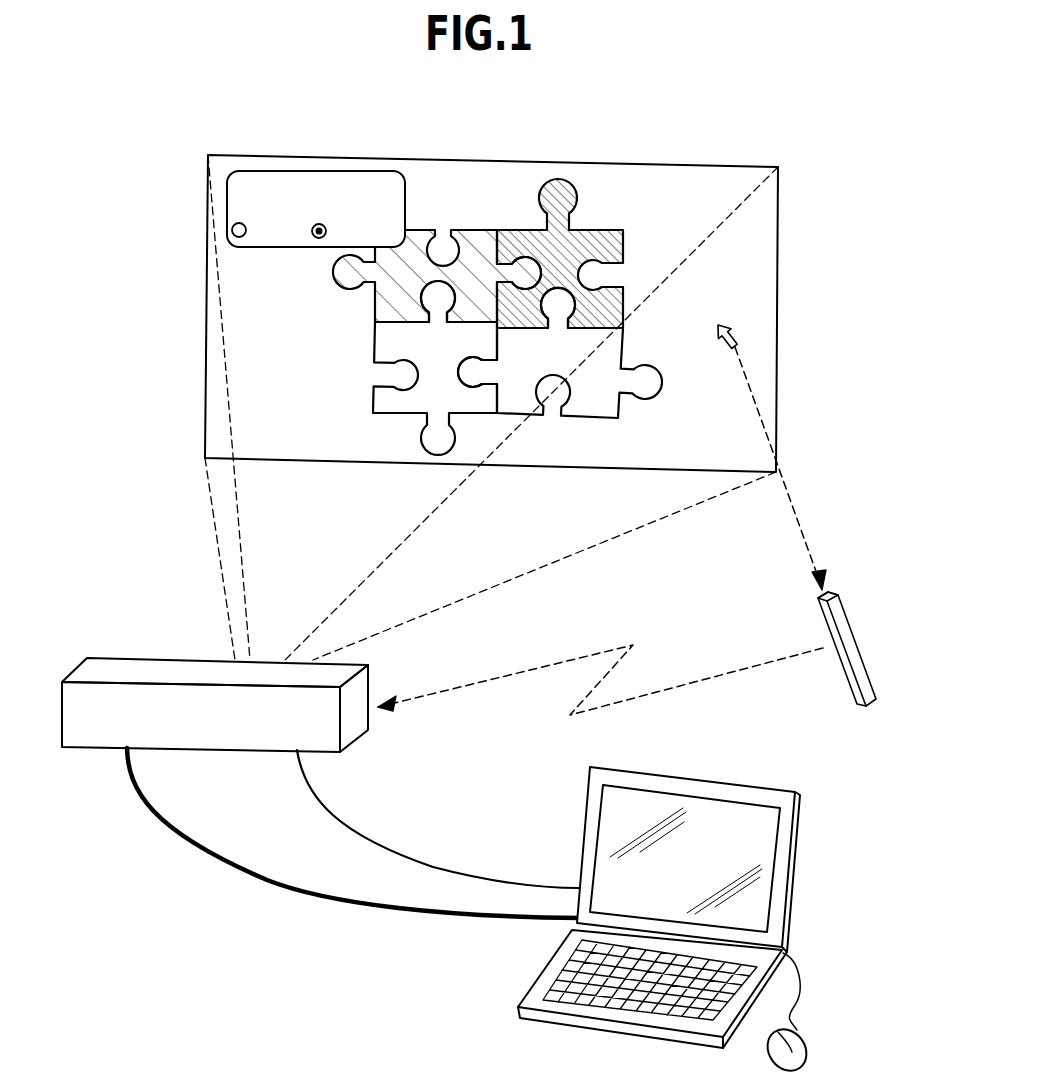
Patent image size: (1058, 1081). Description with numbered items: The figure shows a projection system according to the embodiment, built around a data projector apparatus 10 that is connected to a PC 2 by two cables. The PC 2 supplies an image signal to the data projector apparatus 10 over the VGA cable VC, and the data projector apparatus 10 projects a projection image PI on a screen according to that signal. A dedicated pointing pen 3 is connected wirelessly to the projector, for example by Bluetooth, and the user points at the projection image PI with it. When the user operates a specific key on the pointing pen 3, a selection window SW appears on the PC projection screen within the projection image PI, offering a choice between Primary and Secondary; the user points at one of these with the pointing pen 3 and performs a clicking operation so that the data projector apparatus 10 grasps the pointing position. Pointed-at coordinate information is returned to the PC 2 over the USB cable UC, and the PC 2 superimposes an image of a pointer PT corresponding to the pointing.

The PC 2 is at (798, 855).
The pointing pen 3 is at (850, 632).
The data projector apparatus 10 is at (136, 658).
The projection image PI is at (688, 165).
The selection window SW is at (310, 171).
The pointer PT is at (725, 328).
The USB cable UC is at (438, 863).
The VGA cable VC is at (337, 900).